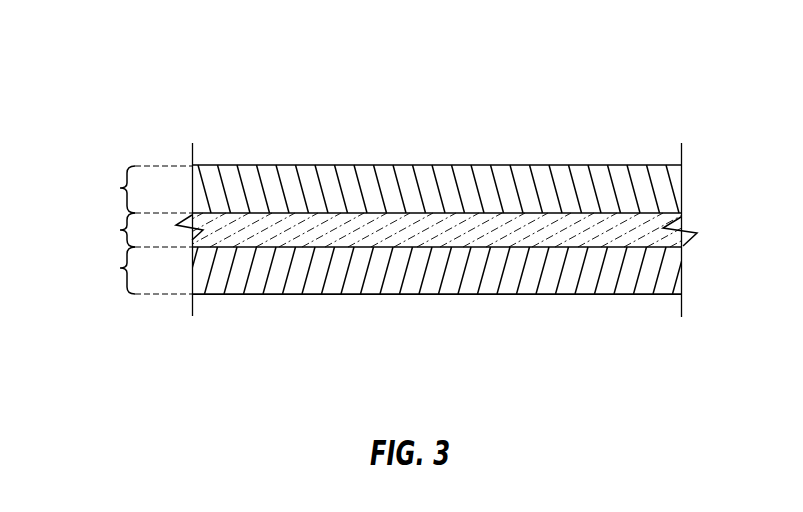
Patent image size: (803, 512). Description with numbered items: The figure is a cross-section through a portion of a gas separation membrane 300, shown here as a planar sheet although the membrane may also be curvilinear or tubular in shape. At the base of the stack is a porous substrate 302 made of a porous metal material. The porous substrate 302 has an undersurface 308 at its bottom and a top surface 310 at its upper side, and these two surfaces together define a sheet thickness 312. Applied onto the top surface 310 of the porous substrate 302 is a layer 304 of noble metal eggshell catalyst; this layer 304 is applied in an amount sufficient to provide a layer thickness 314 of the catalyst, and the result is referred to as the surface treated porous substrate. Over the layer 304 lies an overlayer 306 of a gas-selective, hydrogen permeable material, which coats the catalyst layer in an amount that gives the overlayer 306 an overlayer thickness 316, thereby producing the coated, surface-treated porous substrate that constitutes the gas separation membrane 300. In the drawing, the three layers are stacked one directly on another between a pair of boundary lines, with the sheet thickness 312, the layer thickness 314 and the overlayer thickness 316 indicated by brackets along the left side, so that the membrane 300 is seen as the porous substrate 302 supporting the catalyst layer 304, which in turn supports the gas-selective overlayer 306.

The gas separation membrane 300 is at (617, 50).
The porous substrate 302 is at (667, 265).
The layer of noble metal eggshell catalyst 304 is at (662, 233).
The overlayer of gas-selective material 306 is at (660, 185).
The undersurface 308 is at (298, 295).
The top surface 310 is at (268, 247).
The sheet thickness 312 is at (120, 268).
The layer thickness 314 is at (120, 230).
The overlayer thickness 316 is at (120, 188).